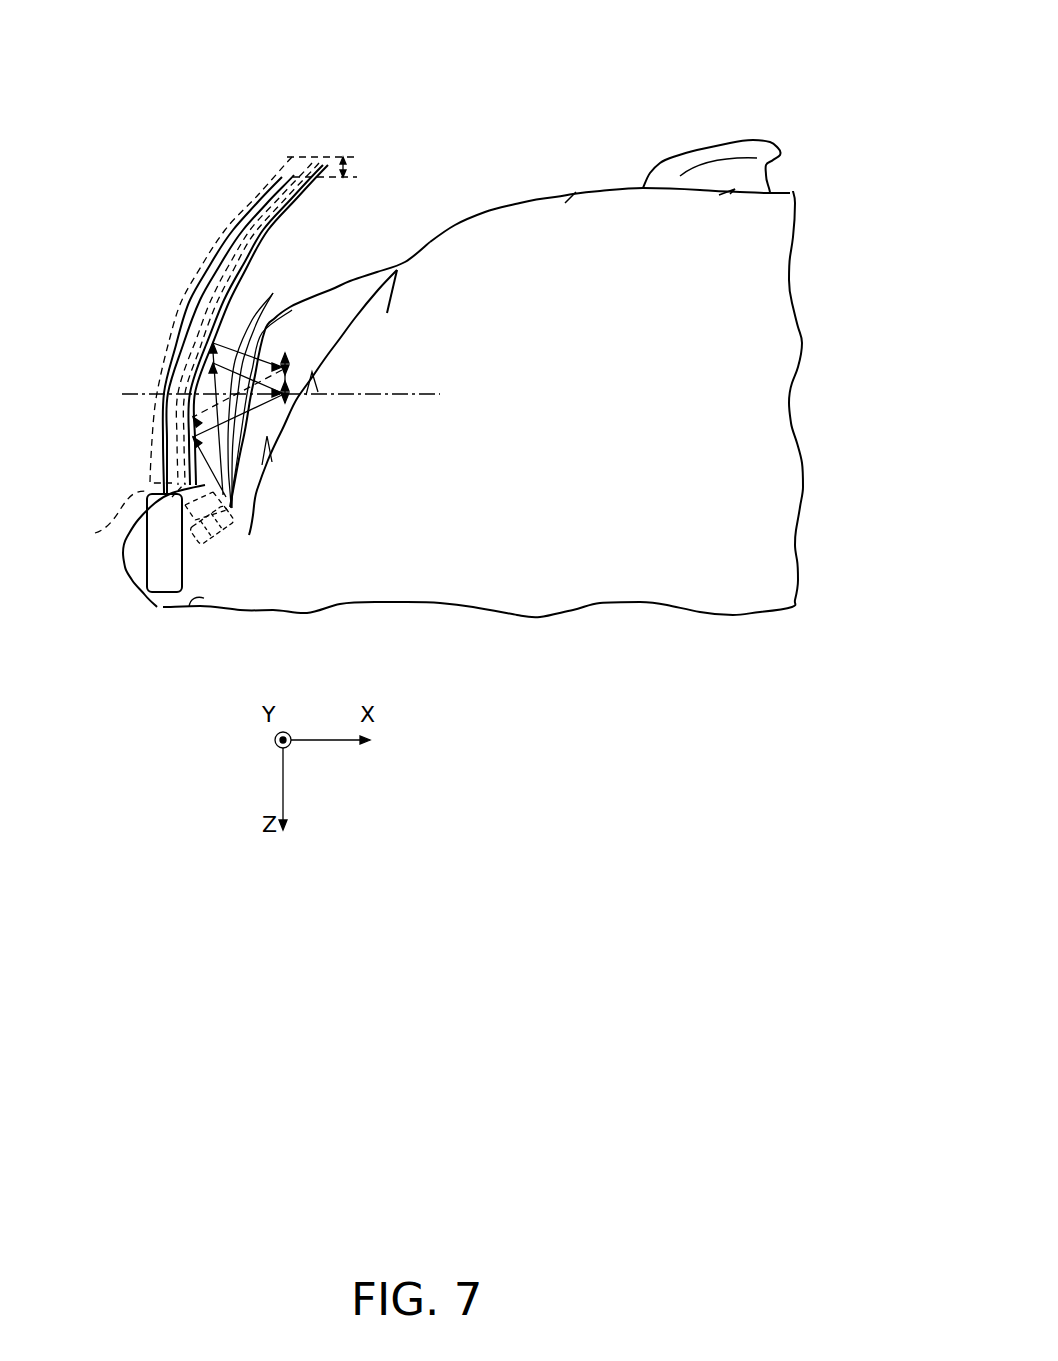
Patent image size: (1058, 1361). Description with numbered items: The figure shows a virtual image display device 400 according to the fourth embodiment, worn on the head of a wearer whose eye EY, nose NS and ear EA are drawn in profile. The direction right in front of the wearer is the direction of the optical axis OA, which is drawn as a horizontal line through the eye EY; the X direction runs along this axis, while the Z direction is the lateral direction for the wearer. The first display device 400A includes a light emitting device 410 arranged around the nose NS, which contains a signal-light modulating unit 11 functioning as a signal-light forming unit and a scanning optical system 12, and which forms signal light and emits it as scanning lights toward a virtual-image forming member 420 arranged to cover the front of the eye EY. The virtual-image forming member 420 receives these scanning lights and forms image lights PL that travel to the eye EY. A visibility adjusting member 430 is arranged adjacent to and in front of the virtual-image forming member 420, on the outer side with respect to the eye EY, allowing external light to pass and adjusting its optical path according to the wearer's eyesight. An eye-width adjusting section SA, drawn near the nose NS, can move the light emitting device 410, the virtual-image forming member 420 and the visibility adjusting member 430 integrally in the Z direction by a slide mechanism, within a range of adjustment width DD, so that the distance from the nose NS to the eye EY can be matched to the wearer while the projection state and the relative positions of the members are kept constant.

The virtual image display device 400 is at (274, 112).
The first display device 400A is at (228, 185).
The virtual-image forming member 420 is at (318, 158).
The visibility adjusting member 430 is at (183, 308).
The light emitting device 410 is at (217, 553).
The adjustment width DD is at (350, 164).
The ear EA is at (730, 165).
The eye EY is at (285, 372).
The image lights PL is at (259, 388).
The optical axis OA is at (156, 395).
The eye-width adjusting section SA is at (158, 564).
The nose NS is at (163, 598).
The signal-light modulating unit 11 is at (197, 530).
The scanning optical system 12 is at (233, 520).